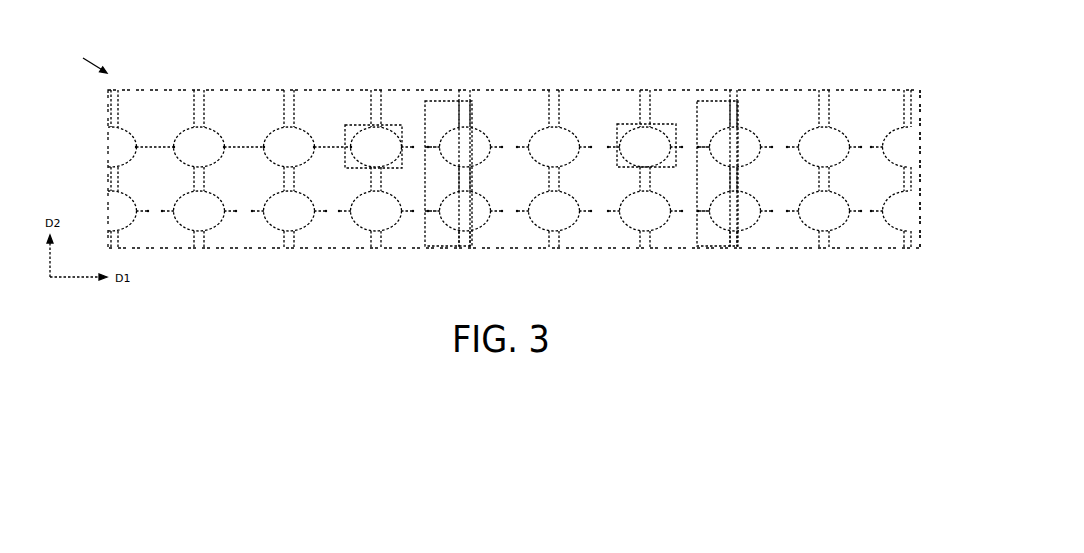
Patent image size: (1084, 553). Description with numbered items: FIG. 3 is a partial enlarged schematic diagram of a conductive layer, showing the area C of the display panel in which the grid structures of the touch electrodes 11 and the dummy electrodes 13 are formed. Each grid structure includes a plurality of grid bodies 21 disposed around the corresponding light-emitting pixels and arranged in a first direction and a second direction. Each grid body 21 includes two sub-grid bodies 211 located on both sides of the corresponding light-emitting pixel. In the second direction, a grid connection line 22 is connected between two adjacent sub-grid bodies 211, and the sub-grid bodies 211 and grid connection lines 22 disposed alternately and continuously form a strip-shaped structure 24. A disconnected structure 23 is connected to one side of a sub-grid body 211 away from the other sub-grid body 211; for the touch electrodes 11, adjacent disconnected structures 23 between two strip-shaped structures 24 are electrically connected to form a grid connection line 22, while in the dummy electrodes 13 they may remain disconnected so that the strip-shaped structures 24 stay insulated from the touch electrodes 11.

The touch electrode 11 is at (112, 197).
The dummy electrode 13 is at (920, 157).
The grid body 21 is at (392, 123).
The grid connection line 22 is at (291, 190).
The disconnected structure 23 is at (137, 143).
The strip-shaped structure 24 is at (452, 101).
The sub-grid body 211 is at (178, 138).
The area C is at (87, 59).